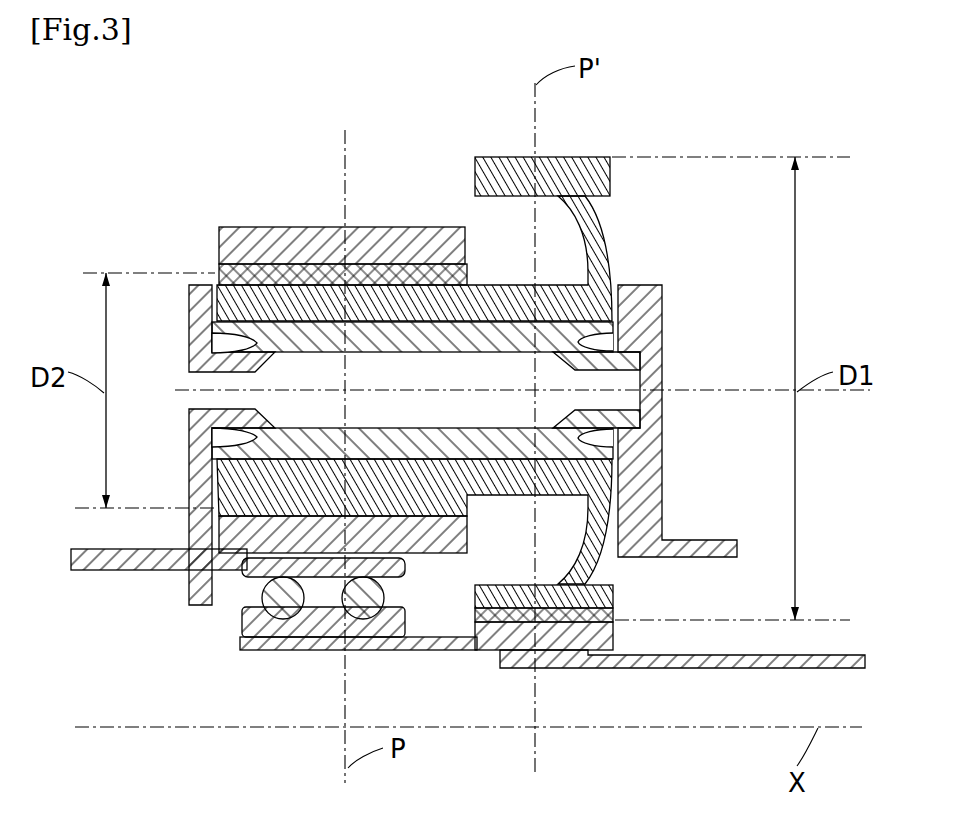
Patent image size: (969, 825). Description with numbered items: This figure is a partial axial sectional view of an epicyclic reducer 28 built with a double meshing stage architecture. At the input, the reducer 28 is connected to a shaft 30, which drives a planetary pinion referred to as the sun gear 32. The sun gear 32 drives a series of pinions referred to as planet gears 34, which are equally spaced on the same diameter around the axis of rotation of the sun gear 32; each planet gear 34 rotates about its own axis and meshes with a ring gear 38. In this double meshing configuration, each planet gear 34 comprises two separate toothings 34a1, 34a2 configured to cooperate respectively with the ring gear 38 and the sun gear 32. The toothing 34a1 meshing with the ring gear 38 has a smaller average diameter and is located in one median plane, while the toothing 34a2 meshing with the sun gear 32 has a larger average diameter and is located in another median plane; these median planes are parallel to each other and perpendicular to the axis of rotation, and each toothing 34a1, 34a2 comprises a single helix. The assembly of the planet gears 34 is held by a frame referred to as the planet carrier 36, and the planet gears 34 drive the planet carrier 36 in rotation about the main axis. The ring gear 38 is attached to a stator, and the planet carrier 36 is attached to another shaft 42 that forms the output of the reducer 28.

The epicyclic reducer 28 is at (758, 92).
The shaft 30 is at (705, 670).
The sun gear 32 is at (487, 640).
The planet gear 34 is at (389, 351).
The toothing 34a1 is at (203, 547).
The toothing 34a2 is at (598, 157).
The planet carrier 36 is at (667, 323).
The ring gear 38 is at (305, 246).
The shaft 42 is at (88, 570).